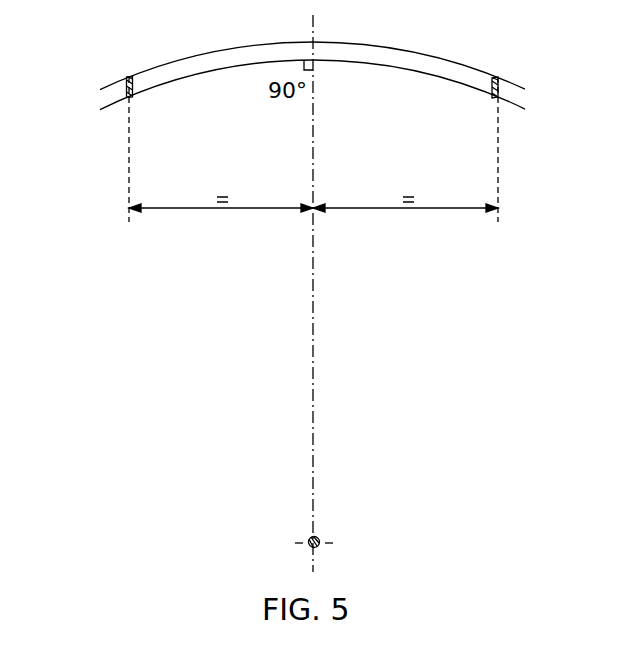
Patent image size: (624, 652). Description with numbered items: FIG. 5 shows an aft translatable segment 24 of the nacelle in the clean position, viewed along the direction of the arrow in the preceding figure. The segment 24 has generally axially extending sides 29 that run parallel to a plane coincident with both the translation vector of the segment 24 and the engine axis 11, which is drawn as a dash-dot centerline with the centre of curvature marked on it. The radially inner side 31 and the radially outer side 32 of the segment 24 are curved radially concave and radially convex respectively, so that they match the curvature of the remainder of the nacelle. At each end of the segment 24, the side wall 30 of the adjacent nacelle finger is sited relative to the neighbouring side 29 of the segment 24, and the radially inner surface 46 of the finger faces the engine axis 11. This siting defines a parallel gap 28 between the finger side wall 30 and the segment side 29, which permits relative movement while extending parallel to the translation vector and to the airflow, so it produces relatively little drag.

The engine axis 11 is at (319, 540).
The aft translatable segment 24 is at (312, 69).
The gap 28 is at (495, 72).
The side 29 is at (137, 85).
The side wall 30 is at (128, 88).
The radially inner side 31 is at (213, 73).
The radially outer side 32 is at (217, 50).
The radially inner surface 46 is at (316, 357).